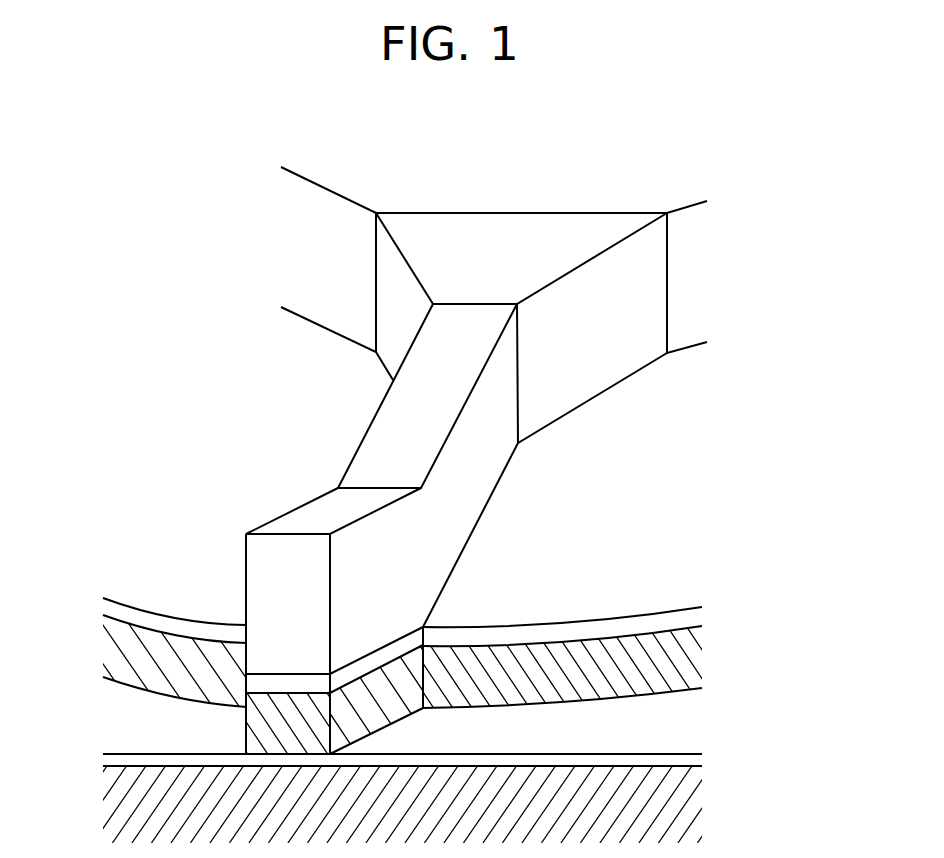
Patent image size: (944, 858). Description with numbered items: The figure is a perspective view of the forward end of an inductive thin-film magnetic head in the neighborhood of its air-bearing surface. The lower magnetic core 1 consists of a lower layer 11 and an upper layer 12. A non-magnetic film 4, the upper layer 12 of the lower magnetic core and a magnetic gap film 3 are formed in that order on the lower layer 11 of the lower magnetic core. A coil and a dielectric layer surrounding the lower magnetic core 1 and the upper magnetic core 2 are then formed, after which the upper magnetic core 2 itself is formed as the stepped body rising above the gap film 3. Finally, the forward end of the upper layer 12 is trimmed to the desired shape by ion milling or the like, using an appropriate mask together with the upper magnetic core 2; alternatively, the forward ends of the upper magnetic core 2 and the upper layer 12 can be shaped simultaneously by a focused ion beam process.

The lower magnetic core 1 is at (414, 720).
The lower layer of the lower magnetic core 11 is at (678, 772).
The upper layer of the lower magnetic core 12 is at (681, 686).
The upper magnetic core 2 is at (367, 465).
The magnetic gap film 3 is at (283, 684).
The non-magnetic film 4 is at (147, 762).